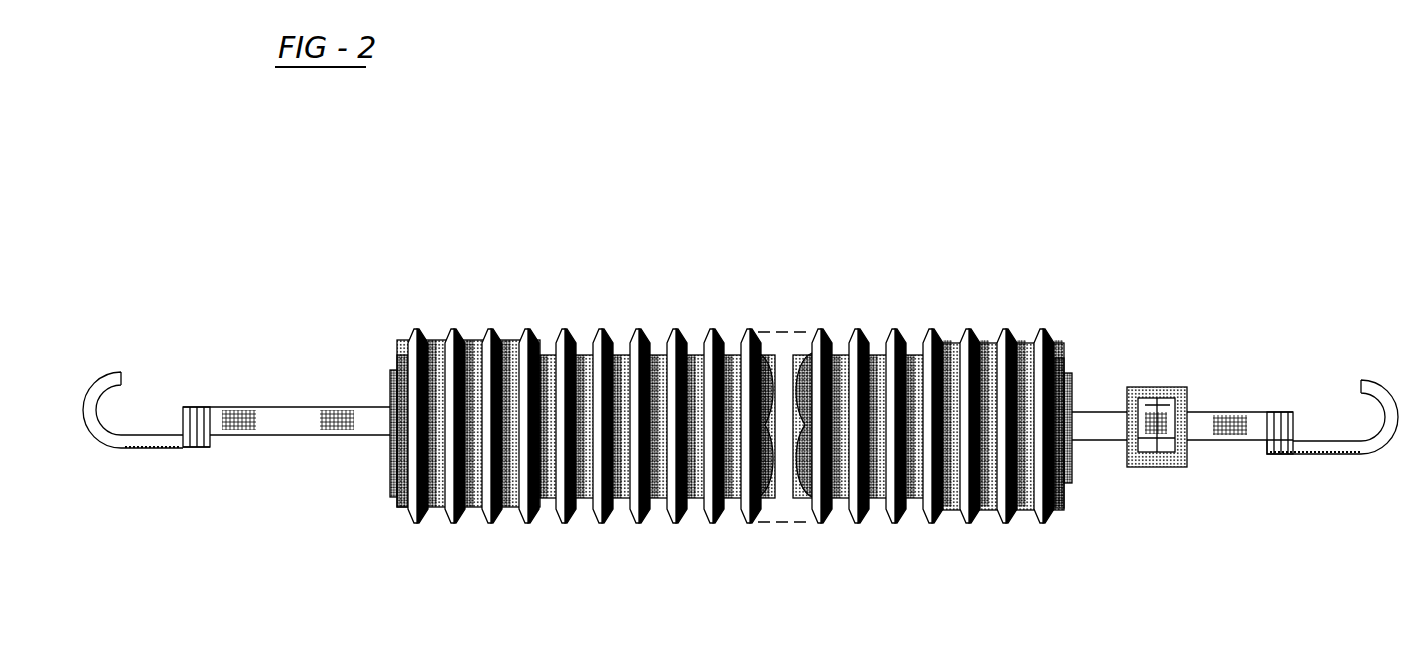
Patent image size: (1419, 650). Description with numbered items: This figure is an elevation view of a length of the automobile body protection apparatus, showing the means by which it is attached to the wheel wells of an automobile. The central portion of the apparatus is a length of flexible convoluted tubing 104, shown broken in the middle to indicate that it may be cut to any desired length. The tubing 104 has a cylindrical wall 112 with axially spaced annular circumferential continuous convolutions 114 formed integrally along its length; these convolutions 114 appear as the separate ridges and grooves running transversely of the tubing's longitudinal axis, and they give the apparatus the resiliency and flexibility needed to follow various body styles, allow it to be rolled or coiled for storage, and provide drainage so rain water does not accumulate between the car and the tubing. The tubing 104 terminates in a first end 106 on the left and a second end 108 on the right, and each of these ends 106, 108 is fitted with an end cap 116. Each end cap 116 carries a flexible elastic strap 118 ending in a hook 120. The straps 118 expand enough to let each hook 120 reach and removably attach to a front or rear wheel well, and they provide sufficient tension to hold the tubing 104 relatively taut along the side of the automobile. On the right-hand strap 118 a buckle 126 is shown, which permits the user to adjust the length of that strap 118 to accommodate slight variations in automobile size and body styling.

The flexible convoluted tubing 104 is at (873, 333).
The first end 106 is at (392, 347).
The second end 108 is at (1074, 362).
The cylindrical wall 112 is at (982, 519).
The axially spaced annular circumferential continuous convolutions 114 is at (595, 524).
The end cap 116 is at (386, 460).
The flexible elastic strap 118 is at (277, 435).
The hook 120 is at (116, 370).
The buckle 126 is at (1186, 464).